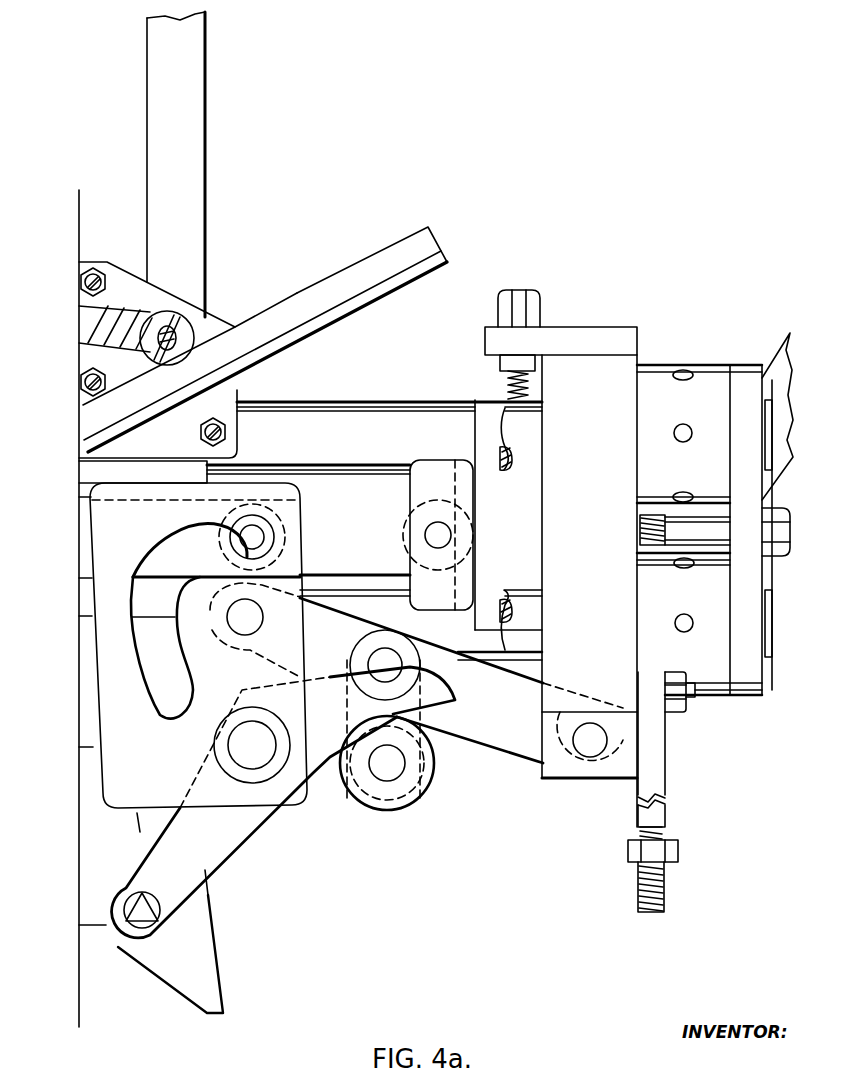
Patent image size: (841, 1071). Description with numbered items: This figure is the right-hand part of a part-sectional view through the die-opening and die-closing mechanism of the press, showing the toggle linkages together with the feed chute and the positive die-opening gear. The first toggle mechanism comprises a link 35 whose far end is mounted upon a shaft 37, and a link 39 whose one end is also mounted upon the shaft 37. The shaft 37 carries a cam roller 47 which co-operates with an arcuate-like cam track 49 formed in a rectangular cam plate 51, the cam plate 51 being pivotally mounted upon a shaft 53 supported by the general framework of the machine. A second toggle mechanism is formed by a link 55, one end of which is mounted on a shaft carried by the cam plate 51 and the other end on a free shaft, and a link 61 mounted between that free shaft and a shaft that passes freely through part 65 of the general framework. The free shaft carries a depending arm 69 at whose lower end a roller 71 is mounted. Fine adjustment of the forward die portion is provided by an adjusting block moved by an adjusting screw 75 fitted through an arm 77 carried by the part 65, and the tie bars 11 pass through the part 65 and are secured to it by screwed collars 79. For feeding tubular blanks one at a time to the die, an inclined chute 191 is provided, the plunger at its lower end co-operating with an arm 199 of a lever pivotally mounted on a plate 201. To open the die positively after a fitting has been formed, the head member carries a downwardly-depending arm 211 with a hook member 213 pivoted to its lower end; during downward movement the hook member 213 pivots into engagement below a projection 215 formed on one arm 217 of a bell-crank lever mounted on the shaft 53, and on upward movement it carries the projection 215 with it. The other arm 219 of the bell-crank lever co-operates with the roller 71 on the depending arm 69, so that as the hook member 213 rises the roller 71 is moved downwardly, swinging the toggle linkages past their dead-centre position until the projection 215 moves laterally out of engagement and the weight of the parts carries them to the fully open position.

The tie bars 11 is at (423, 443).
The link 35 is at (130, 527).
The shaft 37 is at (255, 538).
The link 39 is at (348, 513).
The cam roller 47 is at (257, 520).
The cam track 49 is at (167, 675).
The cam plate 51 is at (220, 787).
The shaft 53 is at (258, 750).
The link 55 is at (315, 655).
The link 61 is at (517, 740).
The part of the general framework 65 is at (572, 390).
The depending arm 69 is at (413, 717).
The roller 71 is at (407, 800).
The adjusting screw 75 is at (508, 384).
The arm 77 is at (615, 345).
The screwed collars 79 is at (703, 400).
The inclined chute 191 is at (395, 257).
The arm of lever 199 is at (120, 322).
The plate 201 is at (200, 337).
The downwardly-depending arm 211 is at (190, 128).
The hook member 213 is at (200, 985).
The projection 215 is at (138, 903).
The arm of bell-crank lever 217 is at (212, 863).
The arm of bell-crank lever 219 is at (362, 707).